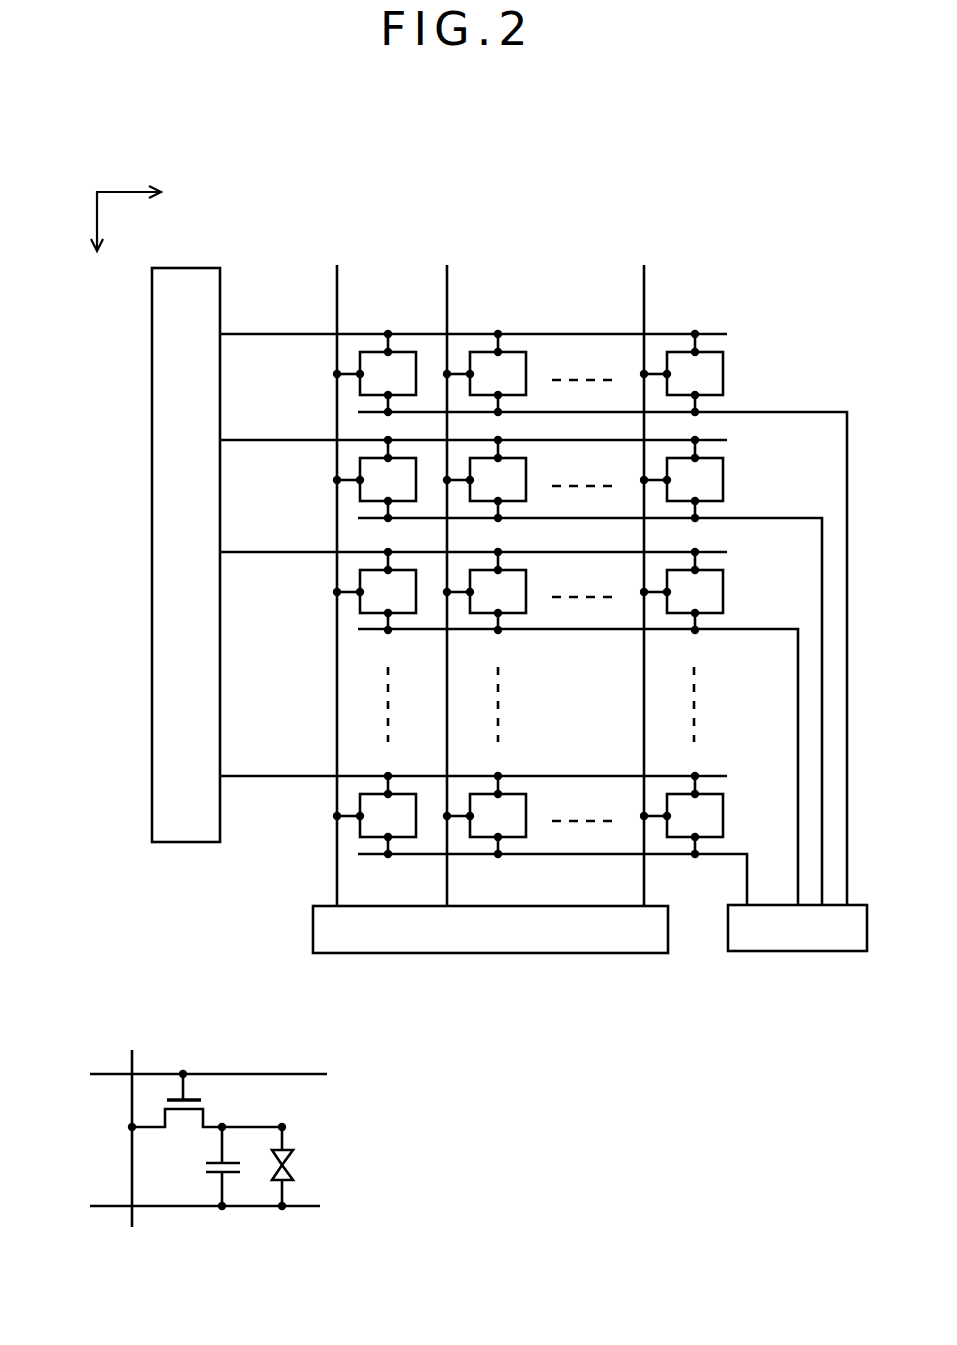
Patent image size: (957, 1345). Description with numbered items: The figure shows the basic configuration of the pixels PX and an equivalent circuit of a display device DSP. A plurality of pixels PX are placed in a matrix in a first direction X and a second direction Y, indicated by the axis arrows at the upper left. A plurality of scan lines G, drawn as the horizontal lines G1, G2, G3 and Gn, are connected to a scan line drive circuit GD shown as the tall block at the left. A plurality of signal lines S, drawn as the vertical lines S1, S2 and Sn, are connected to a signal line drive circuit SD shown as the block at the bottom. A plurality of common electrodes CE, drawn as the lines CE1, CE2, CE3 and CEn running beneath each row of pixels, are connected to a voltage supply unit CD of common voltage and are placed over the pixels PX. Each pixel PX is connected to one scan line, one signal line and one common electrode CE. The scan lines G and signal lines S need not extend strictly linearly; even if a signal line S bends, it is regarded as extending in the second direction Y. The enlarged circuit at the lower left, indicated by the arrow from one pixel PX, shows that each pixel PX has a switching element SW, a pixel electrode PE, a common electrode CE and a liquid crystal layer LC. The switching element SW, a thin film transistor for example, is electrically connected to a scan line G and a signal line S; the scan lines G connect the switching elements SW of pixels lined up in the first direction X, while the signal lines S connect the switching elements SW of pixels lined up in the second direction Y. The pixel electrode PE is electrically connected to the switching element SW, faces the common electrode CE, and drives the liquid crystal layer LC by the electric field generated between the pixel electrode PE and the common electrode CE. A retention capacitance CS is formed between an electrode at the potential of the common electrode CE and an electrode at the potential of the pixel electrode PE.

The display device DSP is at (474, 126).
The scan line drive circuit GD is at (186, 555).
The signal line drive circuit SD is at (490, 929).
The voltage supply unit CD is at (797, 928).
The signal line S1 is at (338, 573).
The signal line S2 is at (446, 573).
The signal line Sn is at (643, 573).
The scan line G1 is at (473, 351).
The scan line G2 is at (473, 458).
The scan line G3 is at (473, 569).
The scan line Gn is at (473, 793).
The common electrode CE1 is at (602, 658).
The common electrode CE2 is at (590, 711).
The common electrode CE3 is at (578, 767).
The common electrode CEn is at (552, 879).
The pixel PX is at (400, 357).
The first direction X is at (138, 216).
The second direction Y is at (95, 260).
The signal line S is at (128, 1124).
The scan line G is at (195, 1075).
The common electrode CE is at (187, 1206).
The switching element SW is at (207, 1100).
The retention capacitance CS is at (205, 1166).
The pixel electrode PE is at (286, 1125).
The liquid crystal layer LC is at (299, 1180).